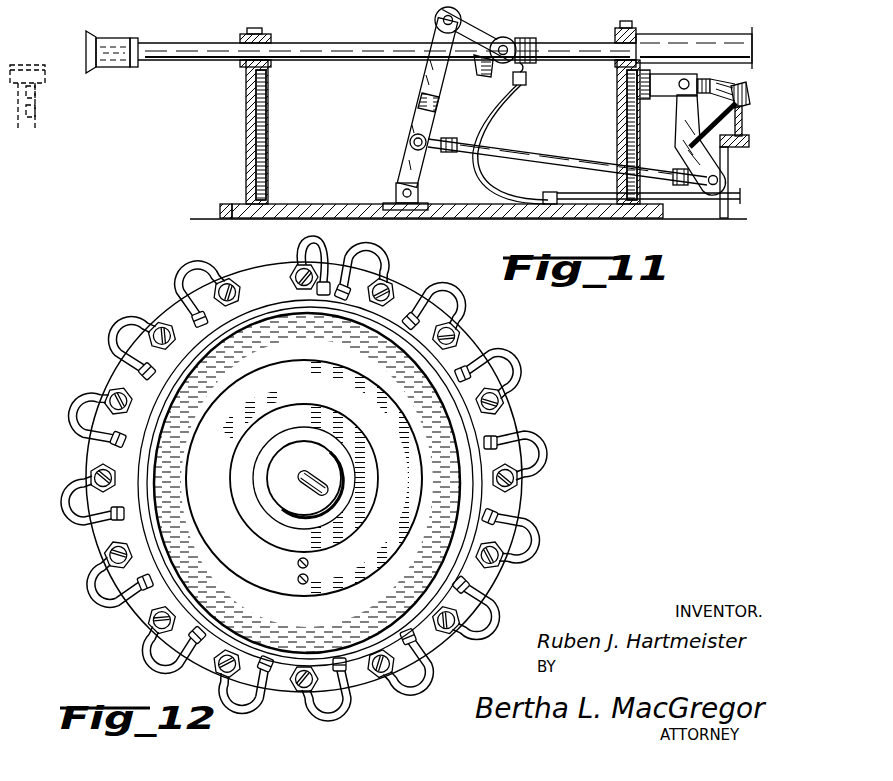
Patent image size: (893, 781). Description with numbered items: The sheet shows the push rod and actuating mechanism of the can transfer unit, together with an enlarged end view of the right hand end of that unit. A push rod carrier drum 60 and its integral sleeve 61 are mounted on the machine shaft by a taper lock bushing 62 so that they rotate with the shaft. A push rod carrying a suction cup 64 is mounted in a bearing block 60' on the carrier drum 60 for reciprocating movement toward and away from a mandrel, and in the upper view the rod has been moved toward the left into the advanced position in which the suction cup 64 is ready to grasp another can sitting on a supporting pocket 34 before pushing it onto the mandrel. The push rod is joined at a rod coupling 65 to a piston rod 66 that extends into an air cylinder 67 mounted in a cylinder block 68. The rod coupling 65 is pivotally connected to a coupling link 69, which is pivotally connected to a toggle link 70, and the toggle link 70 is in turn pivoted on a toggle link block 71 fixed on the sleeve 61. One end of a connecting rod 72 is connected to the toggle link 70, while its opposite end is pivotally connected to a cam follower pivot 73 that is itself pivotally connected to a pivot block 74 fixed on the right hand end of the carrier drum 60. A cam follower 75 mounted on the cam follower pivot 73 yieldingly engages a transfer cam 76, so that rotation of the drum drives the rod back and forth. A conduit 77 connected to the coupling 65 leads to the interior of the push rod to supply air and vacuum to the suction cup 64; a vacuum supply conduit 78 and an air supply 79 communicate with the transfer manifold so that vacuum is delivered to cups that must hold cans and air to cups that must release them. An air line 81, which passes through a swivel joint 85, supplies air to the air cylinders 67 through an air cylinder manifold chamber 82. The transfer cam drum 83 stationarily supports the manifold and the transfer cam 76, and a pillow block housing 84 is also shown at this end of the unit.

In FIG. 11, the pocket 34 is at (48, 80).
In FIG. 11, the push rod carrier drum 60 is at (415, 132).
In FIG. 11, the bearing block 60' is at (282, 38).
In FIG. 11, the sleeve 61 is at (312, 210).
In FIG. 11, the taper lock bushing 62 is at (226, 203).
In FIG. 11, the suction cup 64 is at (110, 63).
In FIG. 11, the rod coupling 65 is at (513, 38).
In FIG. 11, the piston rod 66 is at (552, 52).
In FIG. 11, the air cylinder 67 is at (665, 40).
In FIG. 11, the cylinder block 68 is at (618, 30).
In FIG. 11, the coupling link 69 is at (437, 22).
In FIG. 11, the toggle link 70 is at (418, 118).
In FIG. 11, the toggle link block 71 is at (398, 186).
In FIG. 11, the connecting rod 72 is at (503, 150).
In FIG. 11, the cam follower pivot 73 is at (718, 82).
In FIG. 11, the pivot block 74 is at (676, 88).
In FIG. 11, the cam follower 75 is at (750, 93).
In FIG. 11, the transfer cam 76 is at (745, 116).
In FIG. 11, the conduit 77 is at (495, 100).
In FIG. 12, the vacuum supply conduit 78 is at (312, 585).
In FIG. 12, the air supply 79 is at (309, 563).
In FIG. 12, the air line 81 is at (200, 262).
In FIG. 12, the air cylinder manifold chamber 82 is at (470, 423).
In FIG. 12, the transfer cam drum 83 is at (325, 395).
In FIG. 12, the pillow block housing 84 is at (275, 510).
In FIG. 12, the swivel joint 85 is at (277, 468).